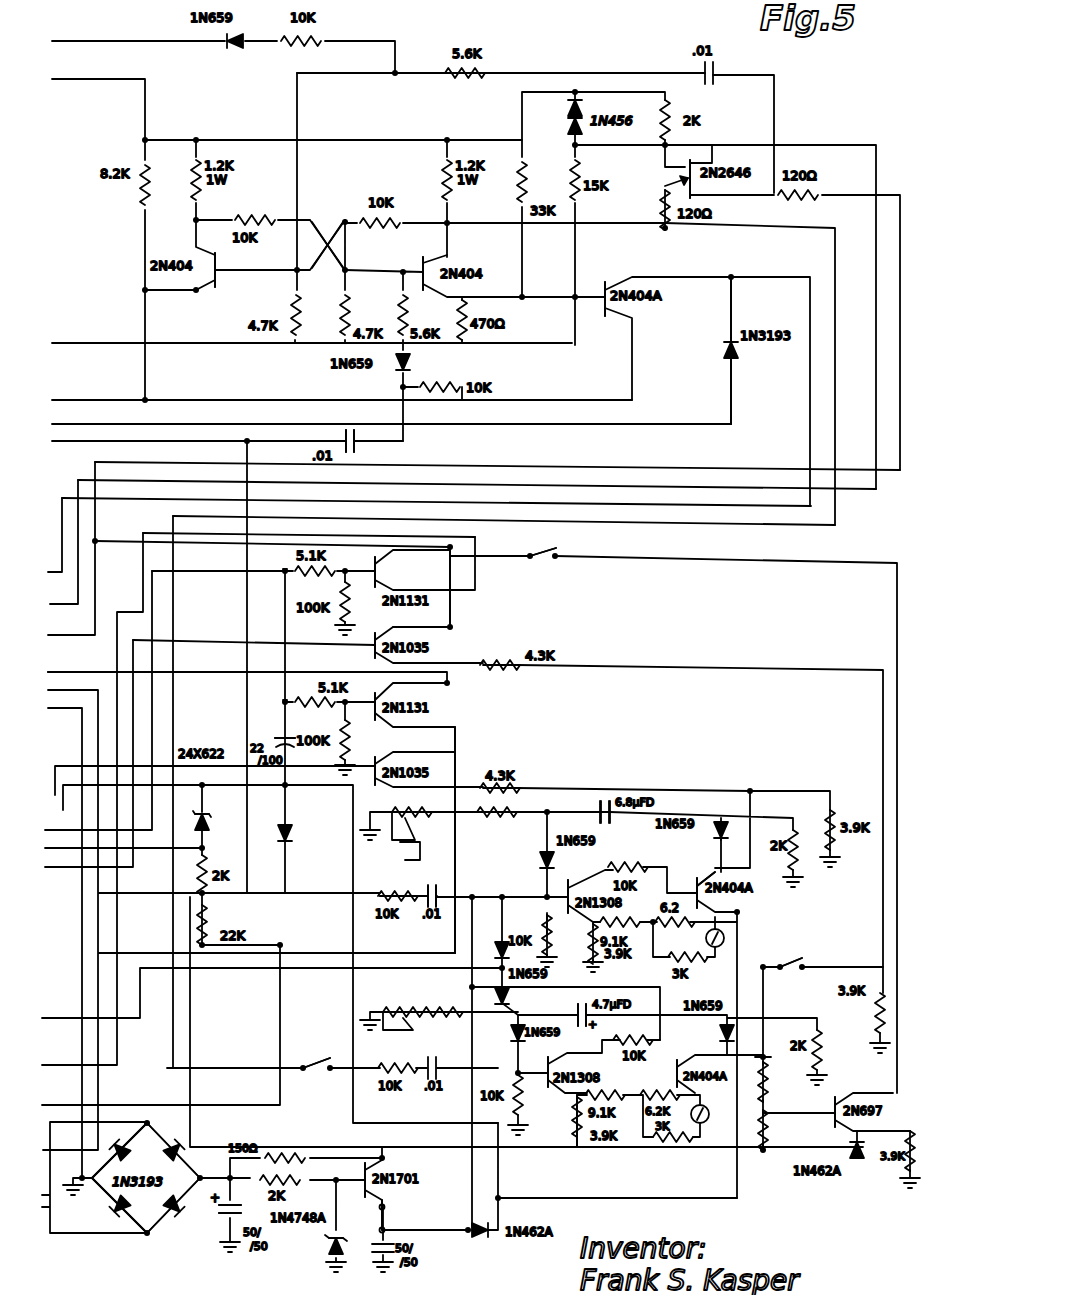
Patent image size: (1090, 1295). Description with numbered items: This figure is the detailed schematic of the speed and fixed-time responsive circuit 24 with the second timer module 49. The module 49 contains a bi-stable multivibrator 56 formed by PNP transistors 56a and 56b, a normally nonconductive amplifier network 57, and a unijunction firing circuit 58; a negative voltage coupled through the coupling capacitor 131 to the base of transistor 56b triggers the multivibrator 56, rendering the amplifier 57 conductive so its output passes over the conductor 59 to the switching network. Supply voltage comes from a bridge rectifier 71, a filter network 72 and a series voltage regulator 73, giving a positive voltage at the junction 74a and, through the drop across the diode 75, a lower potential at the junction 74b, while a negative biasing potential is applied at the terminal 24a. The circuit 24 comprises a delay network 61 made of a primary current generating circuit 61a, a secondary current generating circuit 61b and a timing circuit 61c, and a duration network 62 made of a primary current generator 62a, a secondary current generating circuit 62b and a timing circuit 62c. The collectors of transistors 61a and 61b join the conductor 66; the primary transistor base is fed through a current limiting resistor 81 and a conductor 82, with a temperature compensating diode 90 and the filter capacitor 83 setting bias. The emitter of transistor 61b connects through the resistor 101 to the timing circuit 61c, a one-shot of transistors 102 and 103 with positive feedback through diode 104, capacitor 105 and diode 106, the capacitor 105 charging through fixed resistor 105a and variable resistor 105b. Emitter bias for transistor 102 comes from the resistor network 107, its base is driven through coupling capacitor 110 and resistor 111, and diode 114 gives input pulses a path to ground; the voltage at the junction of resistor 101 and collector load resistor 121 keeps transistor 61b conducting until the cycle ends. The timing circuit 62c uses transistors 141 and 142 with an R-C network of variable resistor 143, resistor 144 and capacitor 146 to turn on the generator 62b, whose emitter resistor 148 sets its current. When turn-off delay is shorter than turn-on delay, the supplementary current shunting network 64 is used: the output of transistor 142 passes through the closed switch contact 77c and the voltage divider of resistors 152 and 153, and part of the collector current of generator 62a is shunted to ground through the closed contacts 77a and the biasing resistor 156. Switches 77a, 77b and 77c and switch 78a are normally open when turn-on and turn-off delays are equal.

The timer module 49 is at (447, 68).
The bi-stable multivibrator 56 is at (326, 235).
The PNP transistor 56a is at (208, 296).
The PNP transistor 56b is at (422, 258).
The amplifier network 57 is at (605, 288).
The unijunction firing circuit 58 is at (664, 180).
The conductor 59 is at (810, 434).
The coupling capacitor 131 is at (365, 447).
The switch contacts 77a is at (555, 556).
The conductor 82 is at (284, 572).
The primary current generator 62a is at (395, 556).
The duration network 62 is at (460, 608).
The secondary current generating circuit 62b is at (456, 632).
The resistor 148 is at (510, 672).
The conductor 66 is at (222, 678).
The current limiting resistor 81 is at (326, 700).
The filter capacitor 83 is at (284, 738).
The primary current generating circuit 61a is at (433, 728).
The delay network 61 is at (478, 728).
The secondary current generating circuit 61b is at (430, 783).
The resistor 101 is at (520, 787).
The speed and fixed time responsive circuit 24 is at (595, 745).
The capacitor 105 is at (600, 812).
The fixed resistor 105a is at (503, 818).
The variable resistor 105b is at (410, 835).
The diode 106 is at (540, 860).
The NPN transistor 102 is at (563, 890).
The diode 104 is at (714, 835).
The timing circuit 61c is at (678, 857).
The transistor 103 is at (718, 898).
The collector load resistor 121 is at (836, 848).
The temperature compensating diode 90 is at (280, 840).
The terminal 24a is at (208, 905).
The resistor 111 is at (378, 897).
The coupling capacitor 110 is at (430, 907).
The diode 114 is at (520, 935).
The resistor network 107 is at (603, 955).
The switch 78a is at (788, 960).
The variable resistor 143 is at (398, 1005).
The resistor 144 is at (443, 1005).
The capacitor 146 is at (576, 1008).
The transistor 141 is at (546, 1068).
The transistor 142 is at (683, 1065).
The switch contact 77c is at (764, 1057).
The resistor 152 is at (768, 1085).
The resistor 153 is at (768, 1130).
The supplementary current shunting network 64 is at (845, 1093).
The biasing resistor 156 is at (905, 1168).
The switch 77b is at (326, 1062).
The series voltage regulator 73 is at (395, 1166).
The junction 74b is at (498, 1198).
The junction 74a is at (460, 1232).
The diode 75 is at (485, 1238).
The timing circuit 62c is at (615, 1150).
The bridge rectifier 71 is at (157, 1226).
The filter network 72 is at (212, 1232).